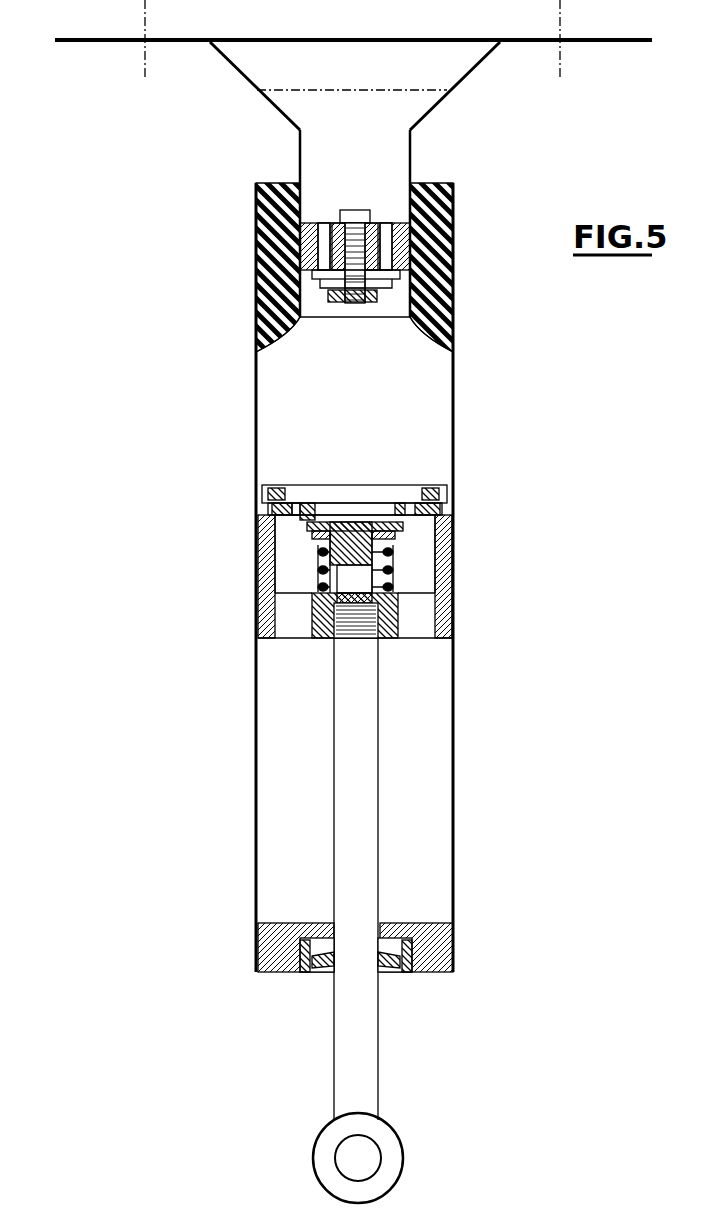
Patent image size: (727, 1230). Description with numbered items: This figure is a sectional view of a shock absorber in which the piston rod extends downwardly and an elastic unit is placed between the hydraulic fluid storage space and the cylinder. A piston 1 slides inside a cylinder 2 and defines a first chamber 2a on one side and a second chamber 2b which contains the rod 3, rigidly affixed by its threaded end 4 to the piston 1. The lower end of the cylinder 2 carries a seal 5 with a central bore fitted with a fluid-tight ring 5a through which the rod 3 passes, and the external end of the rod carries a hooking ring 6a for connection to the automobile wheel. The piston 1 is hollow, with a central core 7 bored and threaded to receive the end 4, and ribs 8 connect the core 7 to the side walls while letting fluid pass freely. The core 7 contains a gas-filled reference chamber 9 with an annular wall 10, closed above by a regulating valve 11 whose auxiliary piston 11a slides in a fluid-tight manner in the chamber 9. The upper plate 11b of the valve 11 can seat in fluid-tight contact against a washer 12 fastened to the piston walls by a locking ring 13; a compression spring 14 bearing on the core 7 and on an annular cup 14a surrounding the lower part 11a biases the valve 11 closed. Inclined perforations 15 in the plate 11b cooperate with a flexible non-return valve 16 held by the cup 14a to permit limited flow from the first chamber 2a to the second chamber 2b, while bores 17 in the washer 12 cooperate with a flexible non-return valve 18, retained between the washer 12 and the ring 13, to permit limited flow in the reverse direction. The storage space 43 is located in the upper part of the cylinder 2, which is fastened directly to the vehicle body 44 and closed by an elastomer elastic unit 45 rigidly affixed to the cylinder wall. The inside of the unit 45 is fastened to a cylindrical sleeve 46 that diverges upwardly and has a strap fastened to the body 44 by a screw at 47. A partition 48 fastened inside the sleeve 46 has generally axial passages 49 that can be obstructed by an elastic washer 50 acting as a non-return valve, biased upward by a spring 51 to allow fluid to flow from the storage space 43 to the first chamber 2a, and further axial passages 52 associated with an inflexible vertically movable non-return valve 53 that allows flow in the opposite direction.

The piston 1 is at (442, 602).
The cylinder 2 is at (455, 706).
The first chamber 2a is at (392, 407).
The second chamber 2b is at (405, 800).
The rod 3 is at (350, 771).
The threaded end 4 is at (358, 622).
The seal 5 is at (433, 948).
The fluid-tight ring 5a is at (400, 970).
The hooking ring 6a is at (390, 1151).
The central core 7 is at (325, 622).
The ribs 8 is at (295, 617).
The reference chamber 9 is at (313, 595).
The annular wall 10 is at (313, 583).
The regulating valve 11 is at (362, 514).
The auxiliary piston 11a is at (388, 557).
The upper plate 11b is at (400, 525).
The washer 12 is at (268, 507).
The locking ring 13 is at (273, 493).
The compression spring 14 is at (395, 580).
The annular cup 14a is at (397, 540).
The perforations 15 is at (310, 528).
The flexible non-return valve 16 is at (312, 537).
The bores 17 is at (298, 505).
The flexible non-return valve 18 is at (313, 520).
The storage space 43 is at (415, 70).
The vehicle body 44 is at (83, 42).
The elastomer elastic unit 45 is at (280, 220).
The cylindrical sleeve 46 is at (299, 160).
The screw 47 is at (145, 68).
The partition 48 is at (400, 252).
The axial passages 49 is at (313, 252).
The elastic washer 50 is at (327, 282).
The spring 51 is at (278, 300).
The axial passages 52 is at (395, 240).
The inflexible non-return valve 53 is at (372, 221).